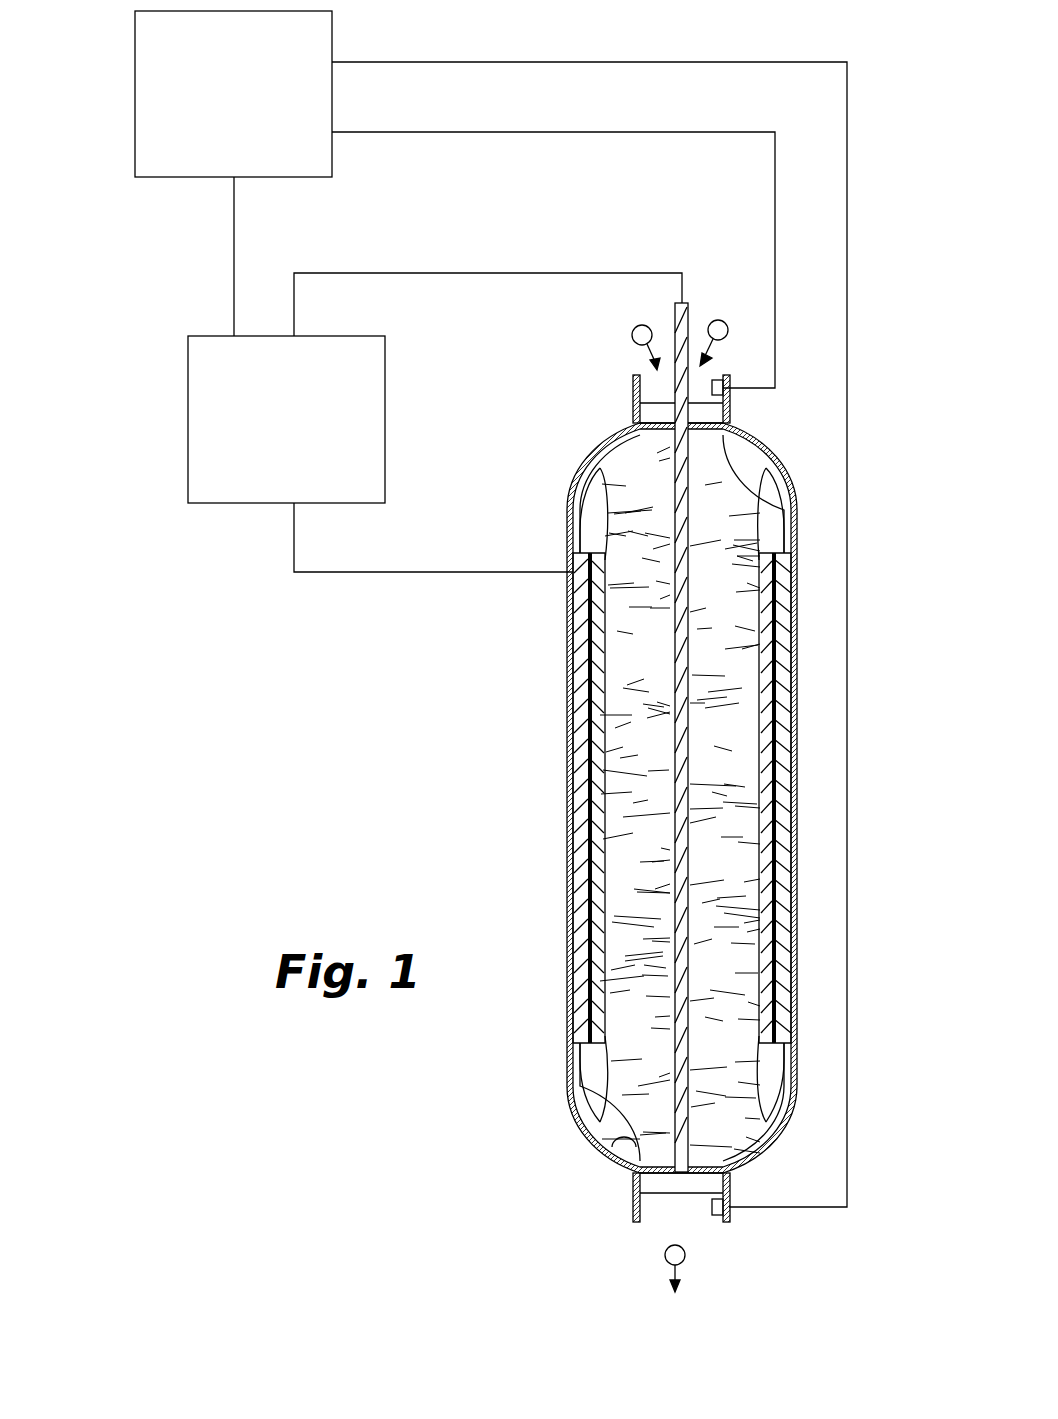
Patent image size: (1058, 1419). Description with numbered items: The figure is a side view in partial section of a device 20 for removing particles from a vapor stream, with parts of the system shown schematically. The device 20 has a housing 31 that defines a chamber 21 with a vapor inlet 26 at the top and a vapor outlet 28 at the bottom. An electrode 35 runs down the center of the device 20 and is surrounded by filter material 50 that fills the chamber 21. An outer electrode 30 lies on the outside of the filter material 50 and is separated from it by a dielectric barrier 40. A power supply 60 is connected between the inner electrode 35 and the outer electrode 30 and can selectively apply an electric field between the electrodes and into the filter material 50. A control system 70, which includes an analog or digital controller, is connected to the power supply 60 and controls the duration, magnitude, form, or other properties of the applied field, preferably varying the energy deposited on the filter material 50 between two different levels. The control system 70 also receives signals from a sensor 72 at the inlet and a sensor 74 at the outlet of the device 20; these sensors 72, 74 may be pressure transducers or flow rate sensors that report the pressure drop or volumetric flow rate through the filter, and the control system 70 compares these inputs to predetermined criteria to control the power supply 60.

The device 20 is at (887, 143).
The chamber 21 is at (592, 1113).
The vapor inlet 26 is at (633, 388).
The vapor outlet 28 is at (633, 1215).
The outer electrode 30 is at (793, 956).
The housing 31 is at (574, 474).
The electrode 35 is at (686, 302).
The dielectric barrier 40 is at (604, 500).
The filter material 50 is at (617, 1145).
The power supply 60 is at (218, 505).
The control system 70 is at (313, 178).
The sensor 72 is at (722, 380).
The sensor 74 is at (718, 1216).